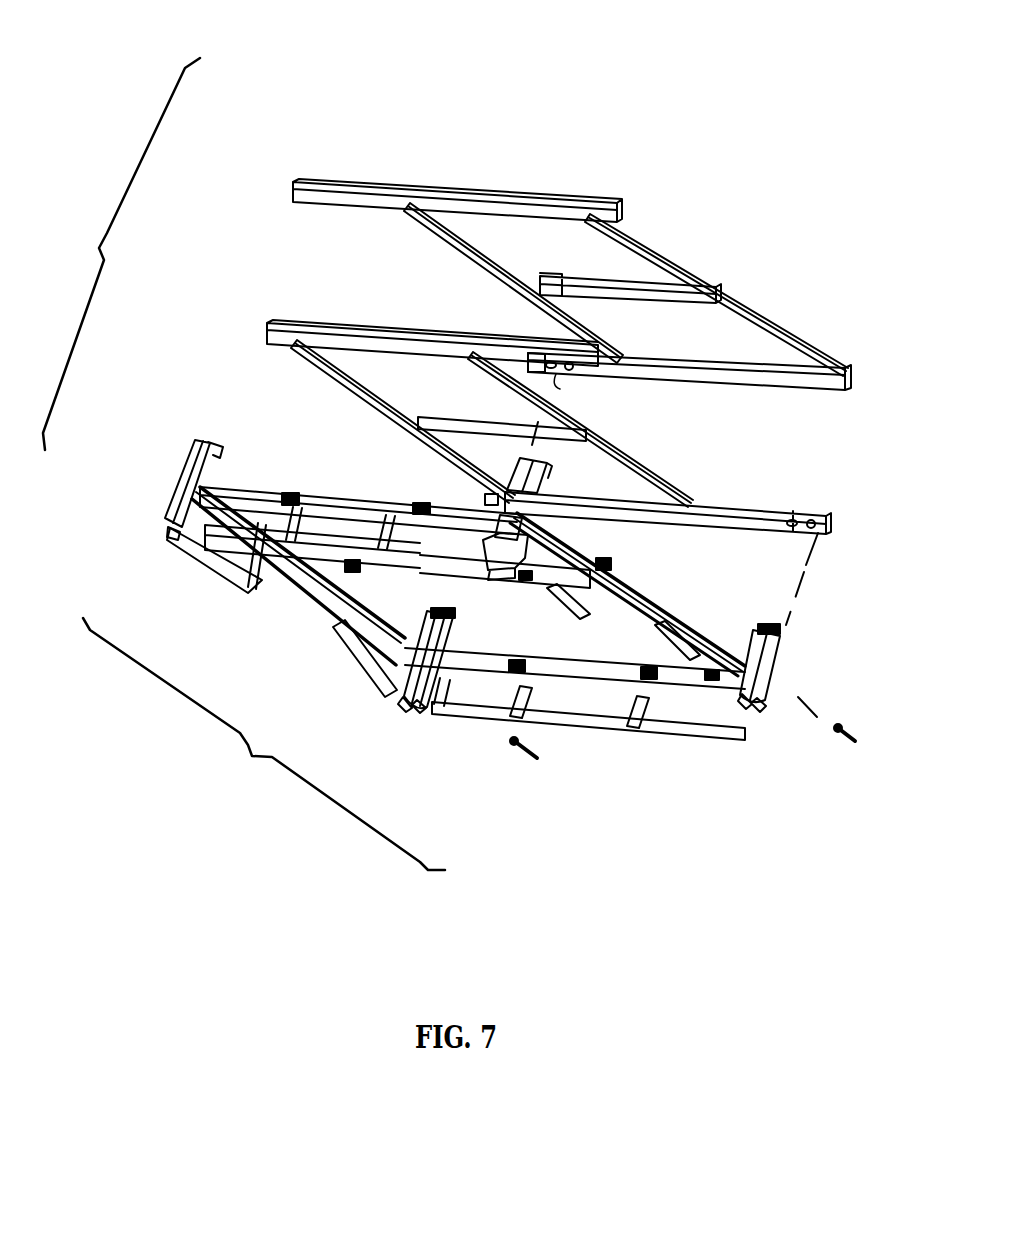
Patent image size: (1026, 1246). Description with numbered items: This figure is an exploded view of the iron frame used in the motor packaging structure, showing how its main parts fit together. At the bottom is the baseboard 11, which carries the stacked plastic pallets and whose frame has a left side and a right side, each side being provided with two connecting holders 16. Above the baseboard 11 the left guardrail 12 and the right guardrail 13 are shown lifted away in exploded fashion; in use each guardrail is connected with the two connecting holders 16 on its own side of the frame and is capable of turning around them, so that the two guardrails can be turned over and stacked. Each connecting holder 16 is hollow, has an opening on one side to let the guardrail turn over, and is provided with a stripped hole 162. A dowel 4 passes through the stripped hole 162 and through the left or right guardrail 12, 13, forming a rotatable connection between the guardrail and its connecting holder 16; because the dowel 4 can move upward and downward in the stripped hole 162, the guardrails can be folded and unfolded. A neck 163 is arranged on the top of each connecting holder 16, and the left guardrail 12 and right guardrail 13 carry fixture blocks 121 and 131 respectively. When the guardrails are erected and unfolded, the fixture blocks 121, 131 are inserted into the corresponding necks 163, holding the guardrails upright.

The dowel 4 is at (528, 755).
The baseboard 11 is at (255, 493).
The left guardrail 12 is at (345, 185).
The right guardrail 13 is at (323, 337).
The connecting holder 16 is at (337, 657).
The fixture block 121 is at (550, 356).
The fixture block 131 is at (805, 509).
The stripped hole 162 is at (380, 678).
The neck 163 is at (430, 613).